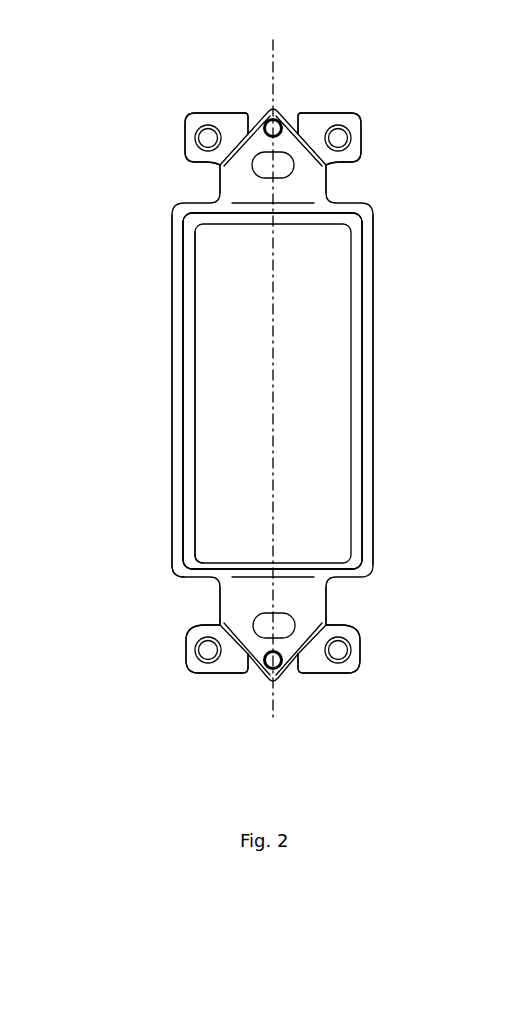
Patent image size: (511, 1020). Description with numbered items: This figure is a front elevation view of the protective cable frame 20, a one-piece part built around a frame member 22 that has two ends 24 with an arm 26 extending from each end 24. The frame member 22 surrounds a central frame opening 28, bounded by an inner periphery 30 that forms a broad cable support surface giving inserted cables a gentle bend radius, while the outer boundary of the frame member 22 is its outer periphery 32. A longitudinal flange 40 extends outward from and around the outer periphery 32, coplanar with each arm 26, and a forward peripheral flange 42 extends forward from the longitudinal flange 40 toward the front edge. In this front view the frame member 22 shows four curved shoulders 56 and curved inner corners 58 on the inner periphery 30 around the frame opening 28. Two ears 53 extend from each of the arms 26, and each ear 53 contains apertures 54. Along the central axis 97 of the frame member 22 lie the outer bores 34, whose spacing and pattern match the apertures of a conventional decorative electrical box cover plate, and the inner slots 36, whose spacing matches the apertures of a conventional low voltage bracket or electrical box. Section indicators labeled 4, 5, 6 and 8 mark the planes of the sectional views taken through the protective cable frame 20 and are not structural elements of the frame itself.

The protective cable frame 20 is at (112, 201).
The frame member 22 is at (172, 277).
The end 24 is at (268, 212).
The arm 26 is at (328, 184).
The frame opening 28 is at (327, 492).
The inner periphery 30 is at (197, 438).
The outer periphery 32 is at (362, 291).
The outer bore 34 is at (275, 116).
The inner slot 36 is at (286, 170).
The longitudinal flange 40 is at (373, 343).
The forward peripheral flange 42 is at (366, 475).
The ear 53 is at (357, 128).
The aperture 54 is at (207, 139).
The curved shoulder 56 is at (175, 570).
The curved inner corner 58 is at (203, 560).
The central axis 97 is at (282, 314).
The section line 4- 4 is at (219, 40).
The section line 5- 5 is at (437, 396).
The section line 6- 6 is at (208, 112).
The section line 8- 8 is at (368, 645).